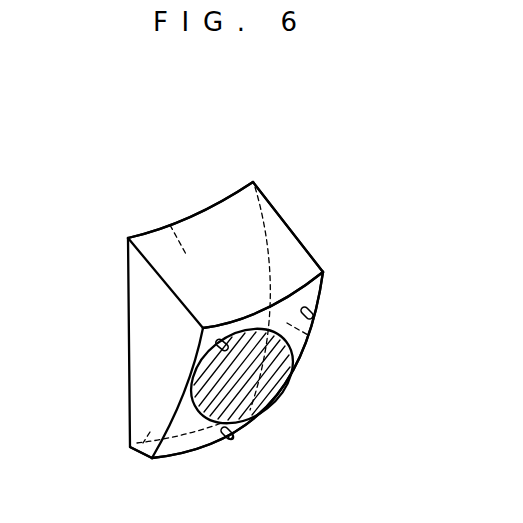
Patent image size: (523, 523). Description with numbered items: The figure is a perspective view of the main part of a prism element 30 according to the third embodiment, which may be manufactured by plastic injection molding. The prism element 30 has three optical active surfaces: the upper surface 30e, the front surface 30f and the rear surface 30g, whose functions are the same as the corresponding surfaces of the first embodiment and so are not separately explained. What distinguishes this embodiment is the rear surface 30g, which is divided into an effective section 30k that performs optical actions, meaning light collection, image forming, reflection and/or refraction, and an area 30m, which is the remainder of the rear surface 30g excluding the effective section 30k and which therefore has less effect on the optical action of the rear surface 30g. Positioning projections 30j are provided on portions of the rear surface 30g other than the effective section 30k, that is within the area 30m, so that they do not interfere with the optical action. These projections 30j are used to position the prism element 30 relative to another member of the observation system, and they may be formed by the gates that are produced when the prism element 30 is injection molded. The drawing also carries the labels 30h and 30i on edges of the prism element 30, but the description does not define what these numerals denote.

The prism element 30 is at (257, 168).
The upper surface 30e is at (298, 262).
The front surface 30f is at (170, 225).
The rear surface 30g is at (275, 356).
The bottom edge 30h is at (140, 448).
The curved side surface 30i is at (305, 333).
The positioning projections 30j is at (207, 347).
The effective section 30k is at (236, 391).
The area 30m is at (242, 328).